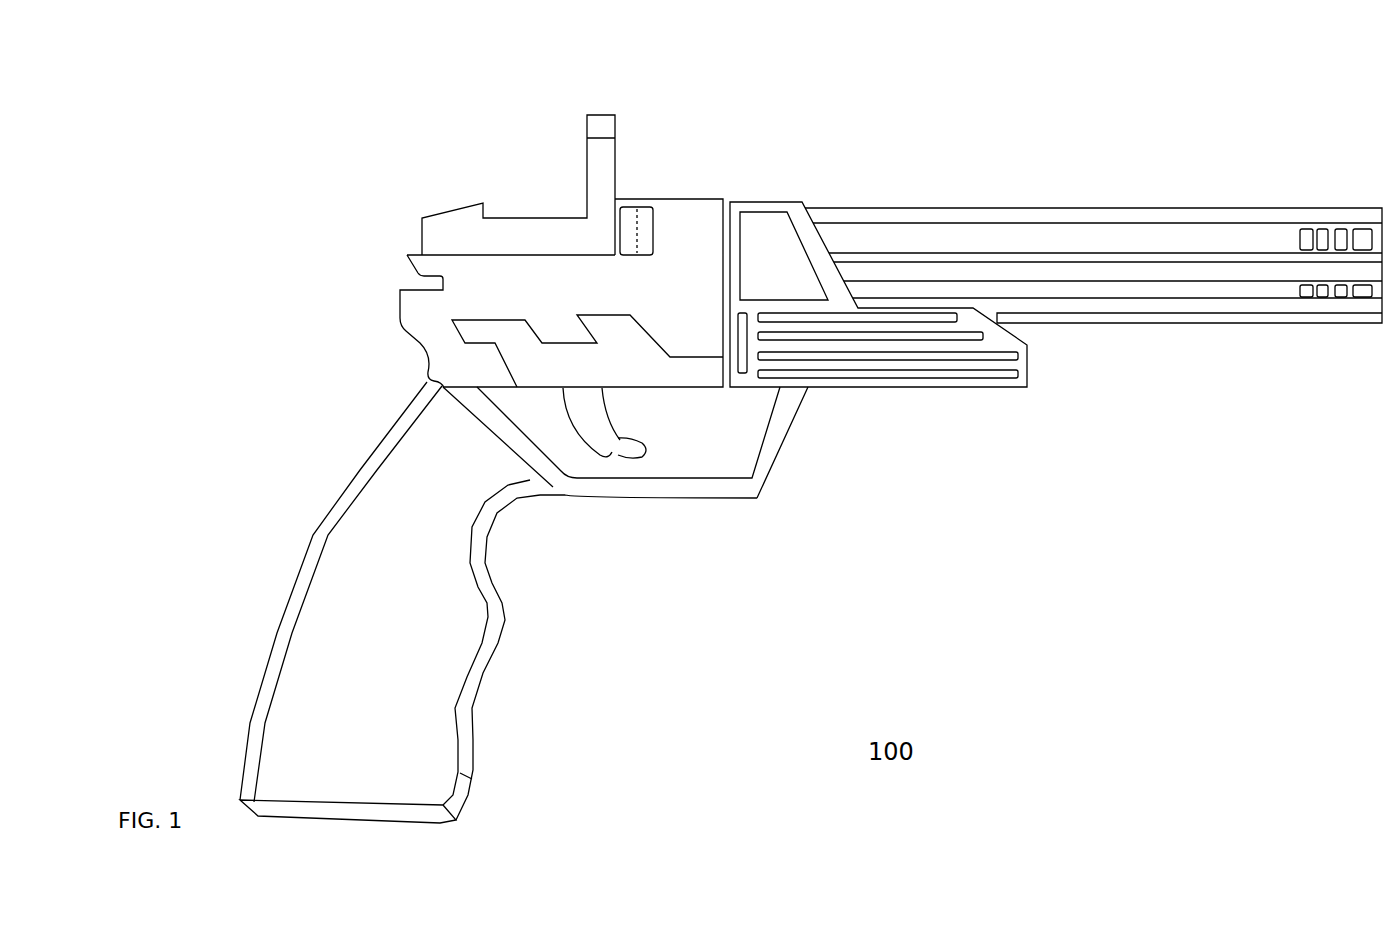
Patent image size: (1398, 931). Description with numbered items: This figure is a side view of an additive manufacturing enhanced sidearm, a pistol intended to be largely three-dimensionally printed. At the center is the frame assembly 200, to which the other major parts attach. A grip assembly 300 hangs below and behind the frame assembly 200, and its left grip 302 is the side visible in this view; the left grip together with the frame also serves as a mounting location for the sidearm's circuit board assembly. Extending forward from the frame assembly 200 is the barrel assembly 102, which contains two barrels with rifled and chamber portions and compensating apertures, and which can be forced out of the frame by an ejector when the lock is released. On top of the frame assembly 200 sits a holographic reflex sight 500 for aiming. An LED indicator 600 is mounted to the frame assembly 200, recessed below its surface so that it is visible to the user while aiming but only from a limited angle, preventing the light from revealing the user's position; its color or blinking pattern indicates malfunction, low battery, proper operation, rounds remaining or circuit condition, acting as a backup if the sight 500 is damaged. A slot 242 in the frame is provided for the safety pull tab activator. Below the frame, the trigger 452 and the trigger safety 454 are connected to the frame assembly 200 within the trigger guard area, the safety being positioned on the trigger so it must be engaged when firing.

The barrel assembly 102 is at (1078, 207).
The frame assembly 200 is at (400, 335).
The slot 242 is at (748, 362).
The grip assembly 300 is at (482, 680).
The left grip 302 is at (472, 777).
The trigger 452 is at (622, 456).
The trigger safety 454 is at (650, 450).
The holographic reflex sight 500 is at (613, 112).
The LED indicator 600 is at (657, 215).